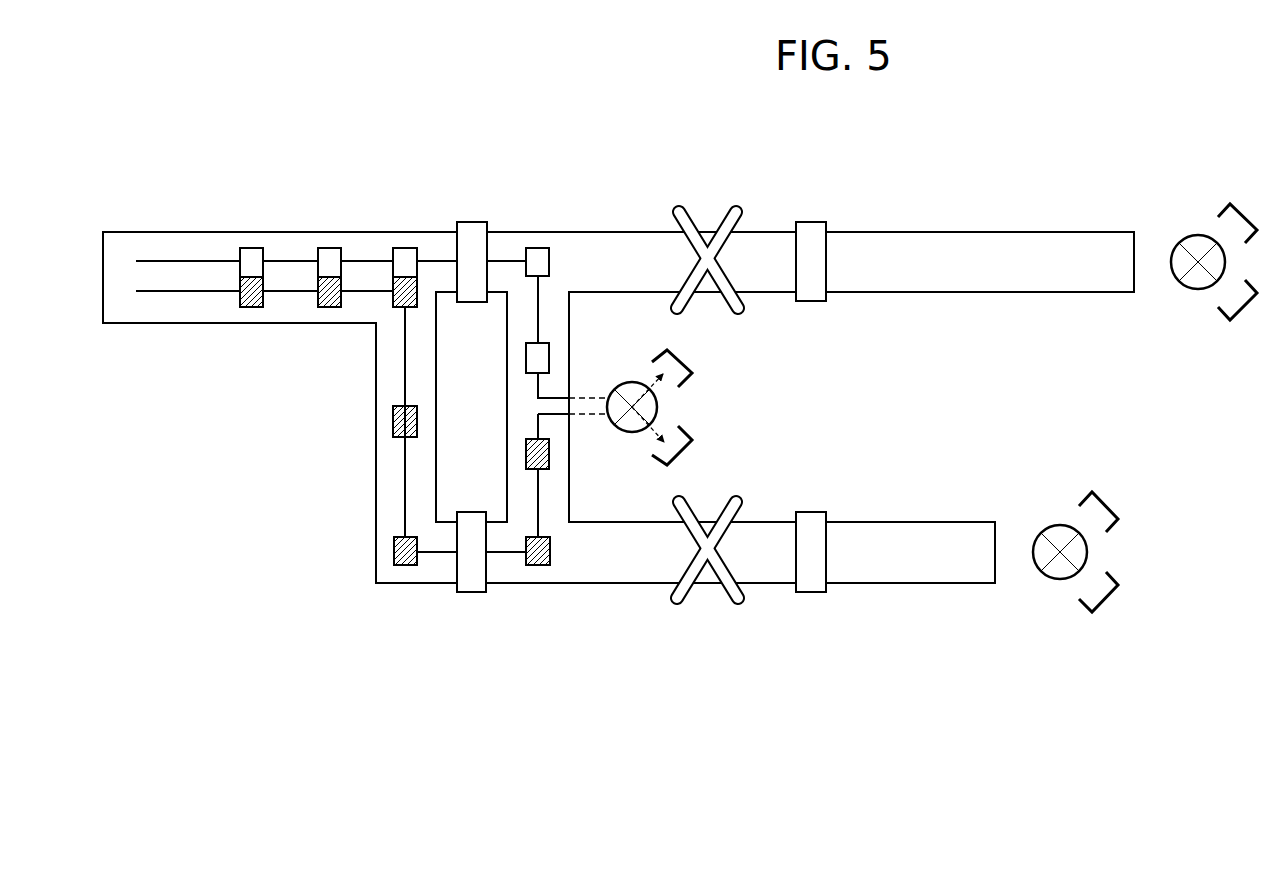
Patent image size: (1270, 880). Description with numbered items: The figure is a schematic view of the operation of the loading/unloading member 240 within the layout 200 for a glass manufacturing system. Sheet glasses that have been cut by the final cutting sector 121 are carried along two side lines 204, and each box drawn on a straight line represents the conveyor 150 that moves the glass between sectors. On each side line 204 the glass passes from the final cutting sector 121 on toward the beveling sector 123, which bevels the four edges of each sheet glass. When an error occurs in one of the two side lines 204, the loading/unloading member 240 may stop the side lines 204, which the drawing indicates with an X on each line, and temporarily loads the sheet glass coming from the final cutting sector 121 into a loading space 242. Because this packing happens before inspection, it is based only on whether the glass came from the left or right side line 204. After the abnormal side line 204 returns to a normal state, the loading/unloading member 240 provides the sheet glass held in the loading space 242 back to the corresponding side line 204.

The layout 200 is at (269, 569).
The conveyor 150 is at (403, 248).
The final cutting sector 121 is at (470, 222).
The beveling sector 123 is at (812, 222).
The side line 204 is at (896, 232).
The loading/unloading member 240 is at (670, 408).
The loading space 242 is at (692, 370).